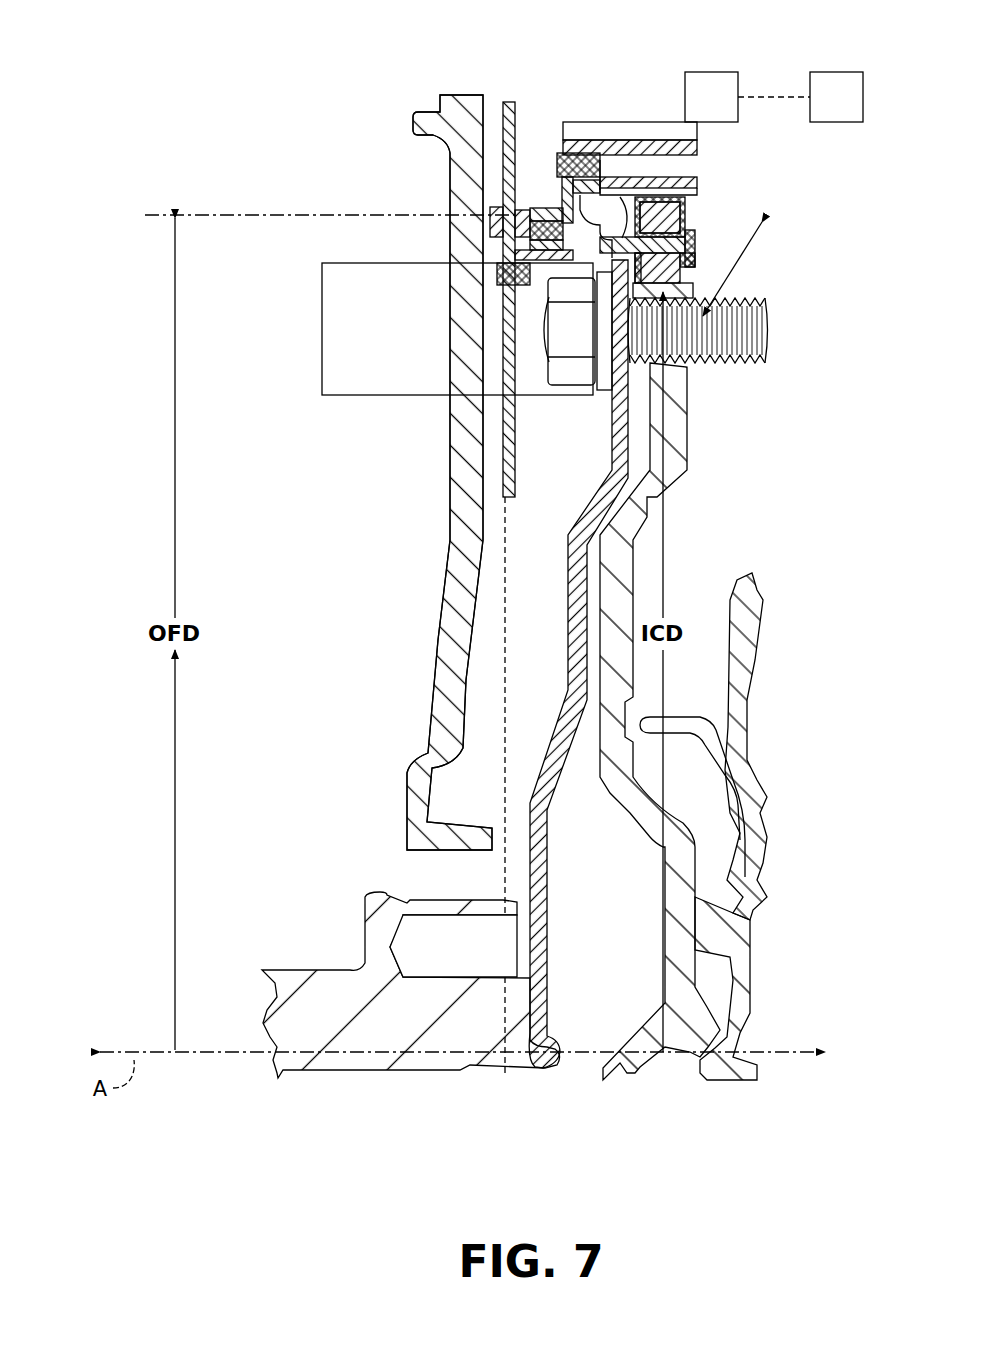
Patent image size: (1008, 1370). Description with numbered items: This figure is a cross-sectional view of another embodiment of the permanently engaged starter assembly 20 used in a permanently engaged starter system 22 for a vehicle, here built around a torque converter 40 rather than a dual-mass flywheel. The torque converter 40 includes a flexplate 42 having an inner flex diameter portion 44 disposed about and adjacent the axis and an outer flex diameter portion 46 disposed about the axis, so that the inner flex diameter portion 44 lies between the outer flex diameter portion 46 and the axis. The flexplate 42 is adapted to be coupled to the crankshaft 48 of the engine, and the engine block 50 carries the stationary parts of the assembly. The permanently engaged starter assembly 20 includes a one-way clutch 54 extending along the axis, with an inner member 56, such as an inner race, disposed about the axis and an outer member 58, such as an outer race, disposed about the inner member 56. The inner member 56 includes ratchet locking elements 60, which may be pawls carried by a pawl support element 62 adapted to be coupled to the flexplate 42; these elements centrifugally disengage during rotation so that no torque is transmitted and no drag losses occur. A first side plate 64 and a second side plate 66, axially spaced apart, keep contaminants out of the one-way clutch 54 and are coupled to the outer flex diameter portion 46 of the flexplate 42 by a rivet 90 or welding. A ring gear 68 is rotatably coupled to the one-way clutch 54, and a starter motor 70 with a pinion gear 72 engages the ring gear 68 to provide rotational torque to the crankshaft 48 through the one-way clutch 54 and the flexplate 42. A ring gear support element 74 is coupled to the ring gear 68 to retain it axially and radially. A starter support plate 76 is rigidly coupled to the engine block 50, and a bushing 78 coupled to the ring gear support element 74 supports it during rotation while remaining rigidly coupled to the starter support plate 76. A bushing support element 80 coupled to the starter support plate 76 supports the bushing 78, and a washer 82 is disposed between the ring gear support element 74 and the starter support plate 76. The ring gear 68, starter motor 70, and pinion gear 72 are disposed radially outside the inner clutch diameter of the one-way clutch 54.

The permanently engaged starter assembly 20 is at (158, 103).
The permanently engaged starter system 22 is at (86, 168).
The torque converter 40 is at (625, 1065).
The flexplate 42 is at (540, 952).
The inner flex diameter portion 44 is at (578, 912).
The outer flex diameter portion 46 is at (668, 330).
The crankshaft 48 is at (362, 1070).
The engine block 50 is at (443, 677).
The one-way clutch 54 is at (723, 218).
The inner member 56 is at (740, 330).
The outer member 58 is at (697, 195).
The ratchet locking elements 60 is at (688, 223).
The pawl support element 62 is at (693, 273).
The first side plate 64 is at (687, 215).
The second side plate 66 is at (640, 197).
The ring gear 68 is at (632, 130).
The starter motor 70 is at (800, 97).
The pinion gear 72 is at (711, 97).
The ring gear support element 74 is at (553, 212).
The starter support plate 76 is at (513, 173).
The bushing 78 is at (520, 252).
The bushing support element 80 is at (547, 276).
The washer 82 is at (513, 233).
The rivet 90 is at (548, 200).